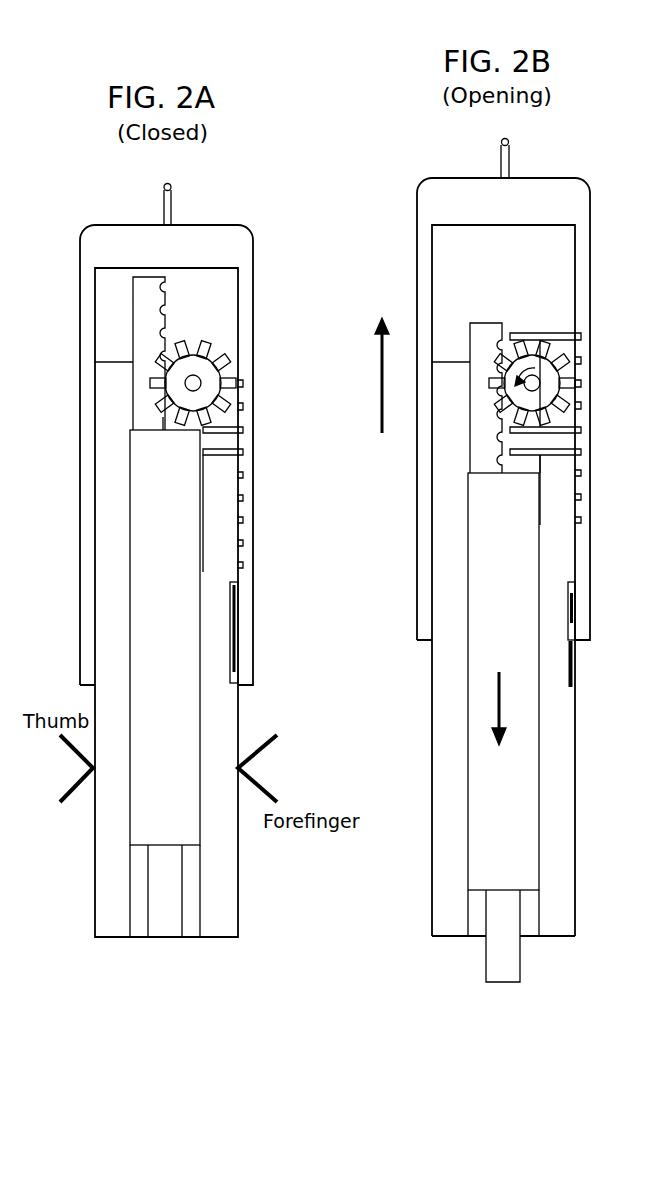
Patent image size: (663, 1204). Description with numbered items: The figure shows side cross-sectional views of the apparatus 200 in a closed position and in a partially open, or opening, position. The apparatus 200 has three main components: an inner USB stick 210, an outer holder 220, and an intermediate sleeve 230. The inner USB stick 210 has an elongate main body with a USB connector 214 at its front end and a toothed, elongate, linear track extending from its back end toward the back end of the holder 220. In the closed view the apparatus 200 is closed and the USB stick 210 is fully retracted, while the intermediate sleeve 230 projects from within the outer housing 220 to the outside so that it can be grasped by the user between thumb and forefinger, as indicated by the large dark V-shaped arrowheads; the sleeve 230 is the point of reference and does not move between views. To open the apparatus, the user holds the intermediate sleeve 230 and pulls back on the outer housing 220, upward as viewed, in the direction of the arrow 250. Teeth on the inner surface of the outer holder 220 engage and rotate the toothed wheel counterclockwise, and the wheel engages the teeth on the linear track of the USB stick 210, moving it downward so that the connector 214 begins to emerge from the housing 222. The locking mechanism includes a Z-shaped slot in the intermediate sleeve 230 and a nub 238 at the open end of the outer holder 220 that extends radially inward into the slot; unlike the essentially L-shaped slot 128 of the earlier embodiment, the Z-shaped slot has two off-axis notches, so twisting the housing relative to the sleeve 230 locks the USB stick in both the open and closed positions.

In FIG. 2A, the apparatus 200 is at (272, 217).
In FIG. 2B, the apparatus 200 is at (408, 188).
In FIG. 2A, the outer holder 220 is at (250, 323).
In FIG. 2B, the outer holder 220 is at (598, 267).
In FIG. 2A, the housing 222 is at (257, 657).
In FIG. 2B, the housing 222 is at (587, 610).
In FIG. 2A, the nub 238 is at (236, 684).
In FIG. 2B, the nub 238 is at (580, 637).
In FIG. 2A, the inner USB stick 210 is at (187, 782).
In FIG. 2B, the inner USB stick 210 is at (527, 829).
In FIG. 2A, the USB connector 214 is at (170, 937).
In FIG. 2B, the USB connector 214 is at (508, 960).
In FIG. 2A, the intermediate sleeve 230 is at (237, 910).
In FIG. 2B, the slot 128 is at (576, 676).
In FIG. 2B, the arrow 250 is at (380, 390).